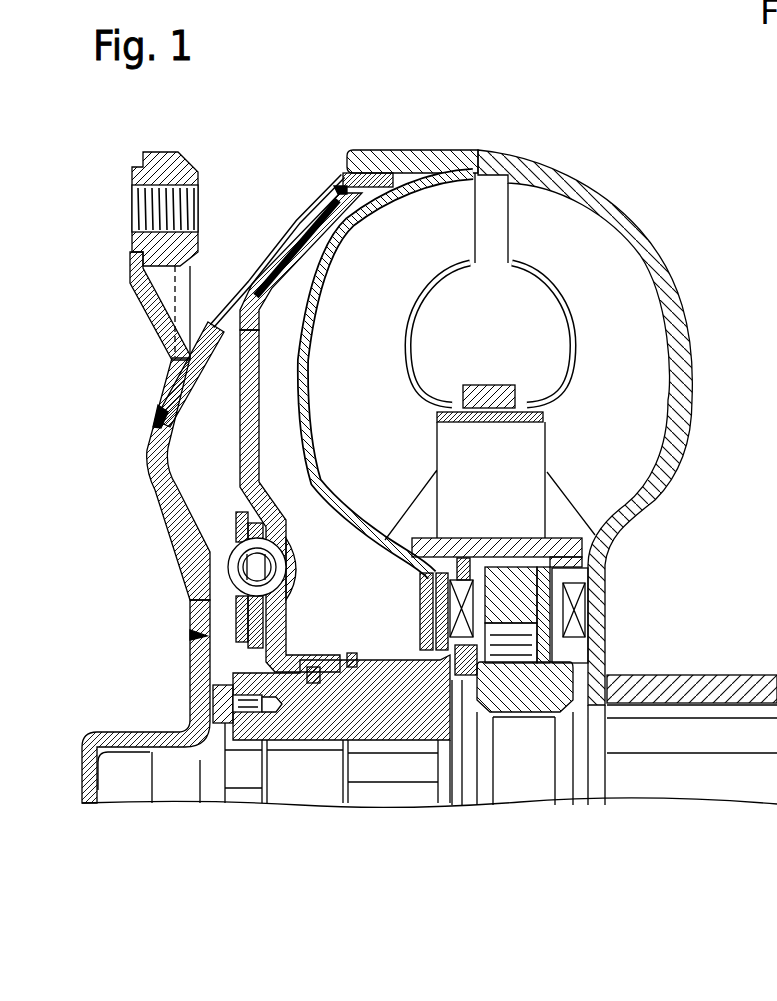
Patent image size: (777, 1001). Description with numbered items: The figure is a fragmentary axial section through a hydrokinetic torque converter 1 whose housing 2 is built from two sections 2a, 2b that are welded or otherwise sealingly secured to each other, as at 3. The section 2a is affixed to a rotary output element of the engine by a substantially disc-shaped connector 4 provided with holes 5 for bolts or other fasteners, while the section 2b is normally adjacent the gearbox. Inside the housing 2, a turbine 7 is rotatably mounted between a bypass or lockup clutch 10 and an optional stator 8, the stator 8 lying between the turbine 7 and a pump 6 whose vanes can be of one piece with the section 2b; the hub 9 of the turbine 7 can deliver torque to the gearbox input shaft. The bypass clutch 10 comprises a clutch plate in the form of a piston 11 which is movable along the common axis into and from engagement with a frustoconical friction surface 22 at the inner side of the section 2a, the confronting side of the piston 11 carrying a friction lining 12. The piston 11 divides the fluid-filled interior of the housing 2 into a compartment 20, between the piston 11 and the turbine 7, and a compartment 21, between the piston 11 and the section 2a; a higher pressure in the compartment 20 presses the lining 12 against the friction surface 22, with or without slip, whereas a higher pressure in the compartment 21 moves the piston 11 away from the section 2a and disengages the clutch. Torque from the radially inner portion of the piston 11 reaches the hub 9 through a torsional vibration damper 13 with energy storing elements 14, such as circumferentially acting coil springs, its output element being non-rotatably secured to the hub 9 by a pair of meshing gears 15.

The hydrokinetic torque converter 1 is at (650, 180).
The housing 2 is at (492, 172).
The housing section 2a is at (287, 237).
The housing section 2b is at (664, 284).
The weld 3 is at (342, 165).
The connector 4 is at (150, 306).
The holes 5 is at (135, 215).
The pump 6 is at (644, 362).
The turbine 7 is at (402, 238).
The stator 8 is at (518, 458).
The hub 9 is at (313, 732).
The bypass clutch 10 is at (214, 495).
The piston 11 is at (233, 413).
The friction lining 12 is at (323, 210).
The torsional vibration damper 13 is at (212, 575).
The energy storing elements 14 is at (237, 583).
The meshing gears 15 is at (220, 672).
The compartment 20 is at (371, 617).
The compartment 21 is at (207, 398).
The friction surface 22 is at (262, 265).